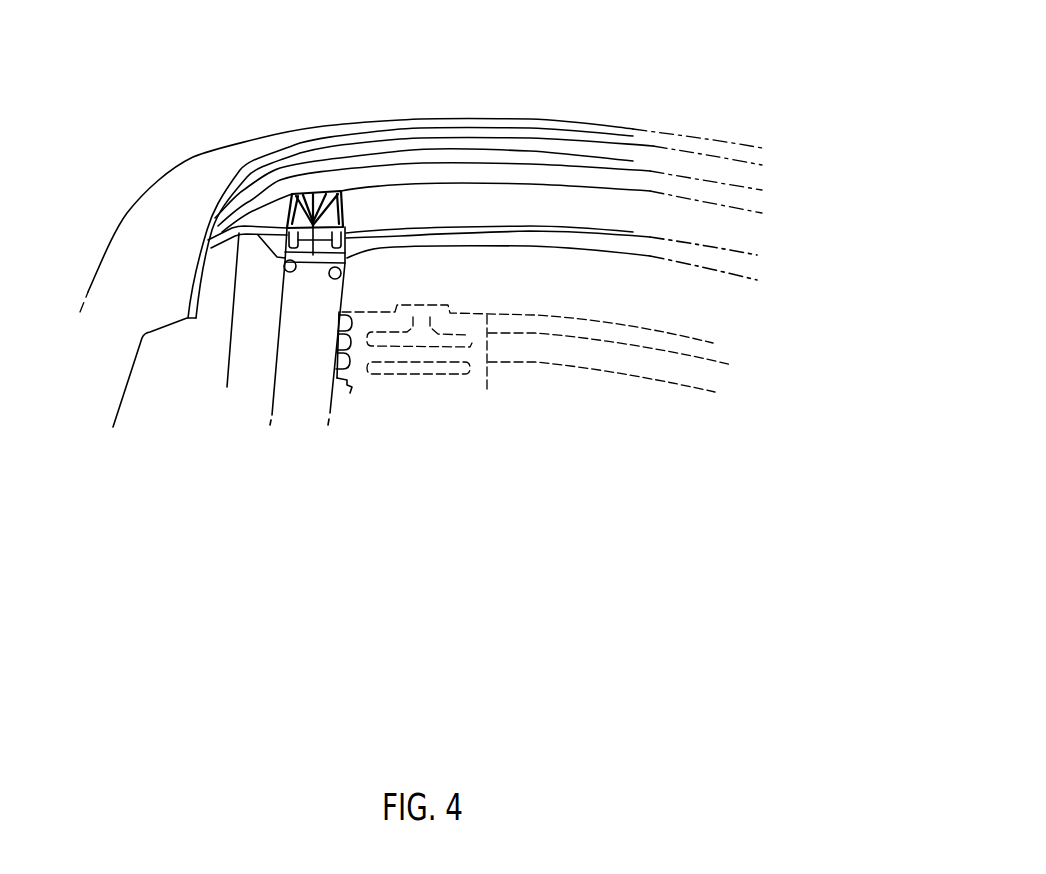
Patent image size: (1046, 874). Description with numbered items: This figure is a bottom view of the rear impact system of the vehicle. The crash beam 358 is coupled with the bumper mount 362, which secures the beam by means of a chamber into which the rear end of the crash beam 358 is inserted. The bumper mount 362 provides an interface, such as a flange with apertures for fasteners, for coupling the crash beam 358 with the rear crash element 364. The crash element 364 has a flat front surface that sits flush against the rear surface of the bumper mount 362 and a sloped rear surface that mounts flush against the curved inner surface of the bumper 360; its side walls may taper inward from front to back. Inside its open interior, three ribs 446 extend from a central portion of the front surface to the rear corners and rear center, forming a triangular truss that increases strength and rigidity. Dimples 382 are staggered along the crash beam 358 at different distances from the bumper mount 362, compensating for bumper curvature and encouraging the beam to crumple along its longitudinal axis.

The crash beam 358 is at (318, 385).
The bumper 360 is at (385, 173).
The bumper mount 362 is at (349, 235).
The crash element 364 is at (290, 215).
The dimples 382 is at (283, 263).
The ribs 446 is at (340, 210).